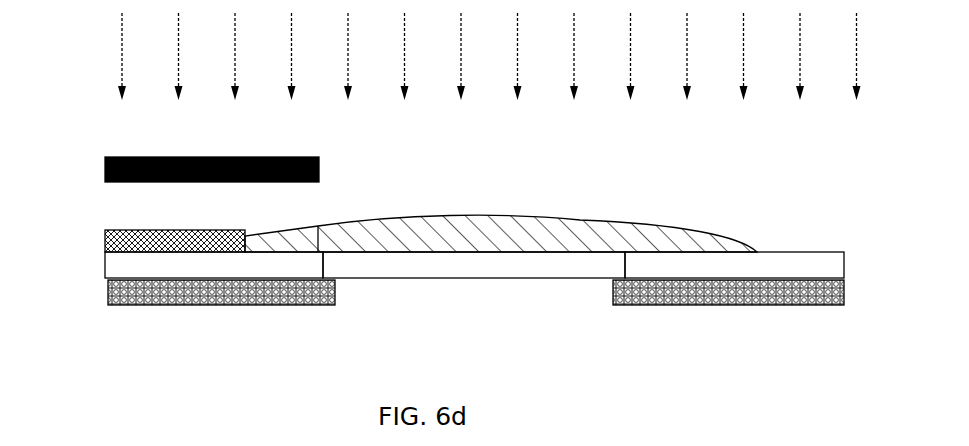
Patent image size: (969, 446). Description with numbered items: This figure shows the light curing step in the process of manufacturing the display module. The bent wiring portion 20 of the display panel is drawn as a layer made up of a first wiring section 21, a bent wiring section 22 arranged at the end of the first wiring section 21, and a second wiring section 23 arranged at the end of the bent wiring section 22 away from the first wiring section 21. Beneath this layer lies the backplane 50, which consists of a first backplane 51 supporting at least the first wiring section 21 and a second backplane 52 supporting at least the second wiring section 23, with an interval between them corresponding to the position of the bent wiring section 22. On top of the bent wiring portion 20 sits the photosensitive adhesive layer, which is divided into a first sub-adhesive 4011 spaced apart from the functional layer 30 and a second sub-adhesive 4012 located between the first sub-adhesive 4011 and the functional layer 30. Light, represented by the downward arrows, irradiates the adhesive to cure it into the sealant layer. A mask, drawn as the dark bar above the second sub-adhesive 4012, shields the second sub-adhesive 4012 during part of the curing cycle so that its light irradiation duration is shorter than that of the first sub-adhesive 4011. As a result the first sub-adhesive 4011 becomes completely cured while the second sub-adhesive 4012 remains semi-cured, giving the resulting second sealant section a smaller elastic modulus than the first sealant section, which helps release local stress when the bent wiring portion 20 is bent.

The bent wiring portion 20 is at (432, 310).
The first wiring section 21 is at (209, 306).
The bent wiring section 22 is at (400, 268).
The second wiring section 23 is at (725, 279).
The functional layer 30 is at (153, 229).
The first sub-adhesive 4011 is at (548, 253).
The second sub-adhesive 4012 is at (283, 252).
The backplane 50 is at (432, 324).
The first backplane 51 is at (158, 306).
The second backplane 52 is at (683, 306).